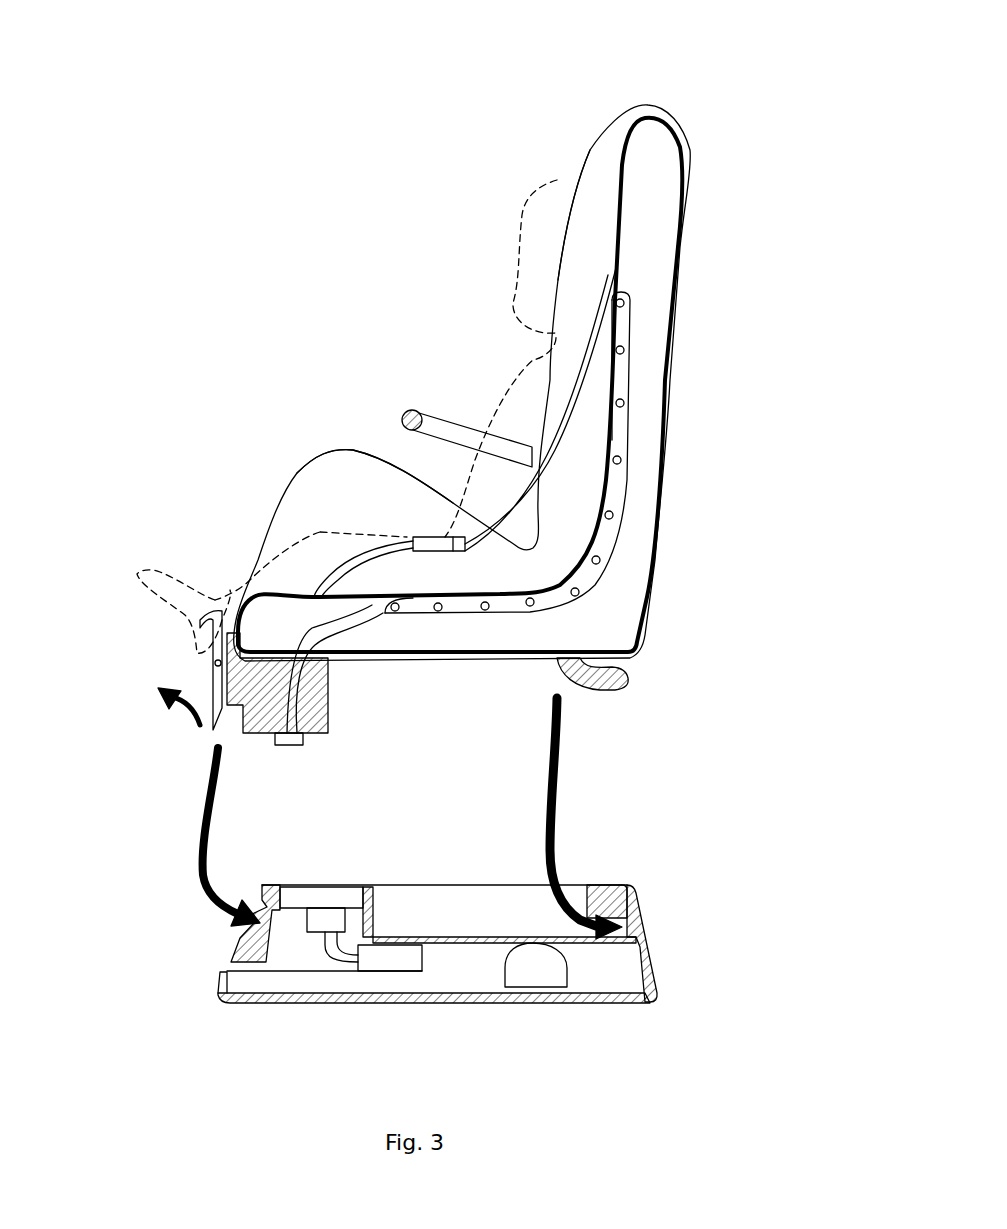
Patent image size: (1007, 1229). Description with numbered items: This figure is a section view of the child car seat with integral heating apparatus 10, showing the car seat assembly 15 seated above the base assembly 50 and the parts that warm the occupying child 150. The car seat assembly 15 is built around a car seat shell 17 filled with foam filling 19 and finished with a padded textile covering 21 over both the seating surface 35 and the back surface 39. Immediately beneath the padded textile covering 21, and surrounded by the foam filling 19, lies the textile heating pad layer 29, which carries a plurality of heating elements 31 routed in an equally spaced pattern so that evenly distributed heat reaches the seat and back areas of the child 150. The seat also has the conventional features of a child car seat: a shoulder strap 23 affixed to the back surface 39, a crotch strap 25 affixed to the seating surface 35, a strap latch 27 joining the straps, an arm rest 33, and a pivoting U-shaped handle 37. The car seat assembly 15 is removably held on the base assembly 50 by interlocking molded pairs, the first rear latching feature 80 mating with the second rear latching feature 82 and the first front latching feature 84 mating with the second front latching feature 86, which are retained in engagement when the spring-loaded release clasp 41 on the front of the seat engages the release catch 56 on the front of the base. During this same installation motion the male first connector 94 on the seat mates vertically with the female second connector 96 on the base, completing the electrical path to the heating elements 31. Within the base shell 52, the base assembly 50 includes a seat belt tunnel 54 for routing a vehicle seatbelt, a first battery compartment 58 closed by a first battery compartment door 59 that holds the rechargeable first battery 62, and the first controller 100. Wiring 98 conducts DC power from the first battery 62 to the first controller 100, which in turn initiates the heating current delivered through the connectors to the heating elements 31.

The child car seat with integral heating apparatus 10 is at (105, 86).
The car seat assembly 15 is at (648, 87).
The car seat shell 17 is at (677, 248).
The foam filling 19 is at (655, 292).
The padded textile covering 21 is at (682, 165).
The shoulder strap 23 is at (557, 427).
The crotch strap 25 is at (370, 547).
The strap latch 27 is at (430, 537).
The heating pad layer 29 is at (622, 495).
The heating element 31 is at (616, 403).
The arm rest 33 is at (297, 470).
The seating surface 35 is at (413, 598).
The handle 37 is at (408, 411).
The back surface 39 is at (597, 540).
The release clasp 41 is at (213, 677).
The base assembly 50 is at (196, 1023).
The base shell 52 is at (645, 950).
The seat belt tunnel 54 is at (565, 985).
The release catch 56 is at (250, 925).
The first battery compartment 58 is at (370, 1000).
The first battery compartment door 59 is at (220, 982).
The first battery 62 is at (277, 985).
The first rear latching feature 80 is at (628, 680).
The second rear latching feature 82 is at (615, 890).
The first front latching feature 84 is at (330, 700).
The second front latching feature 86 is at (298, 892).
The first connector 94 is at (330, 918).
The second connector 96 is at (302, 743).
The wiring 98 is at (327, 640).
The first controller 100 is at (400, 960).
The occupying child 150 is at (557, 180).